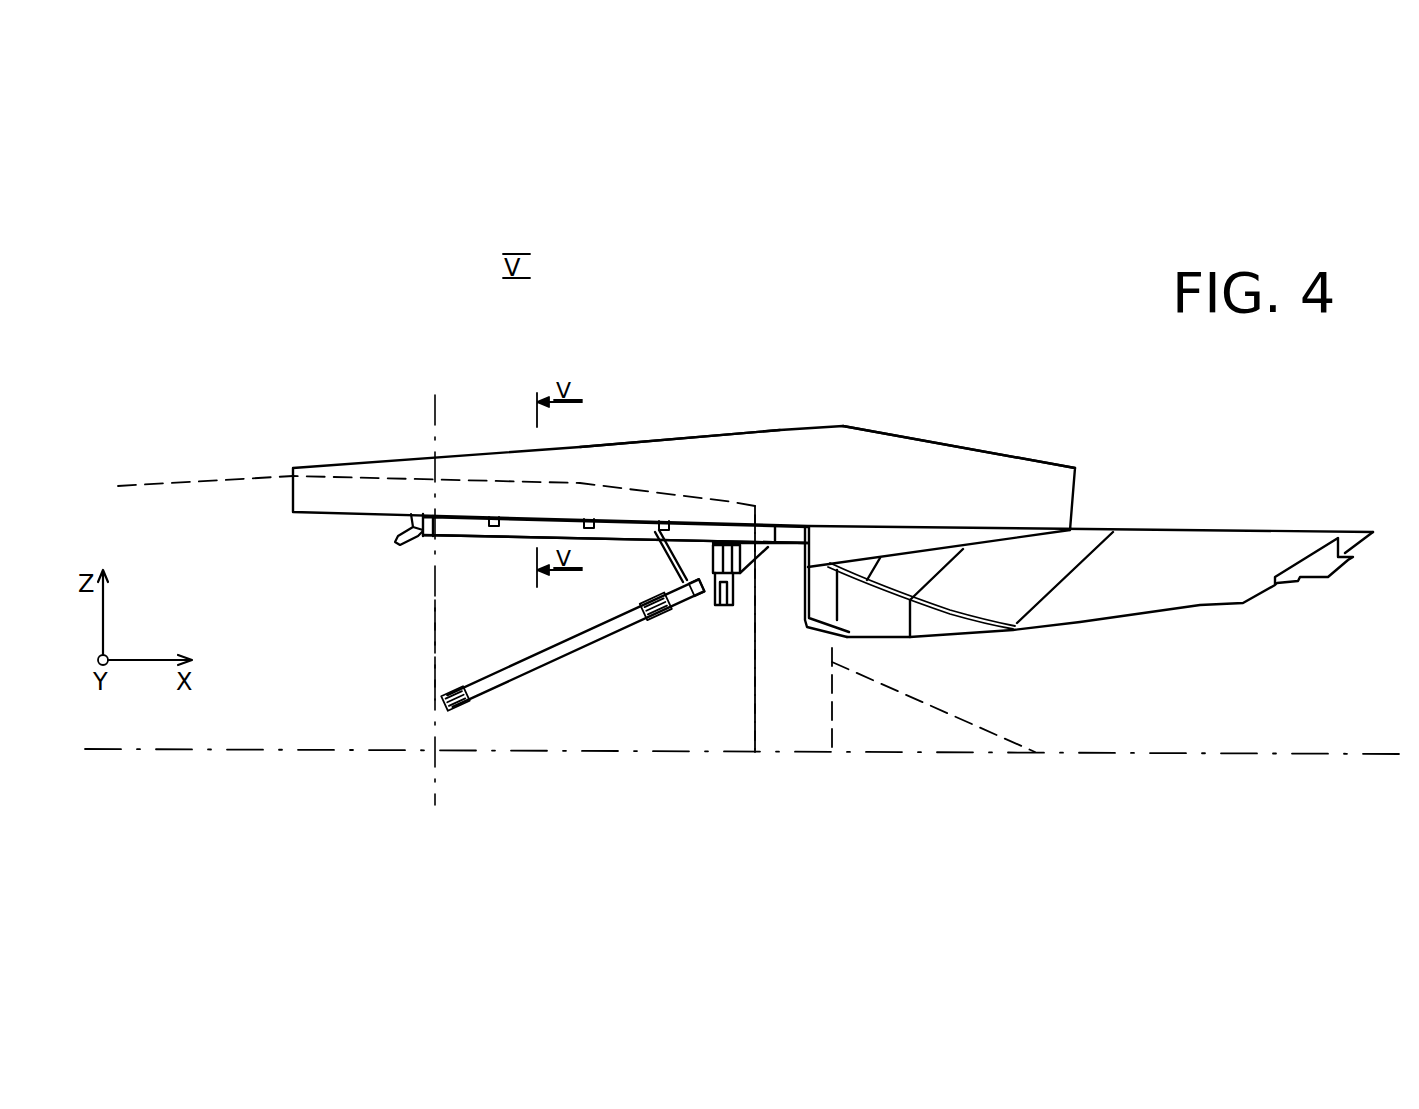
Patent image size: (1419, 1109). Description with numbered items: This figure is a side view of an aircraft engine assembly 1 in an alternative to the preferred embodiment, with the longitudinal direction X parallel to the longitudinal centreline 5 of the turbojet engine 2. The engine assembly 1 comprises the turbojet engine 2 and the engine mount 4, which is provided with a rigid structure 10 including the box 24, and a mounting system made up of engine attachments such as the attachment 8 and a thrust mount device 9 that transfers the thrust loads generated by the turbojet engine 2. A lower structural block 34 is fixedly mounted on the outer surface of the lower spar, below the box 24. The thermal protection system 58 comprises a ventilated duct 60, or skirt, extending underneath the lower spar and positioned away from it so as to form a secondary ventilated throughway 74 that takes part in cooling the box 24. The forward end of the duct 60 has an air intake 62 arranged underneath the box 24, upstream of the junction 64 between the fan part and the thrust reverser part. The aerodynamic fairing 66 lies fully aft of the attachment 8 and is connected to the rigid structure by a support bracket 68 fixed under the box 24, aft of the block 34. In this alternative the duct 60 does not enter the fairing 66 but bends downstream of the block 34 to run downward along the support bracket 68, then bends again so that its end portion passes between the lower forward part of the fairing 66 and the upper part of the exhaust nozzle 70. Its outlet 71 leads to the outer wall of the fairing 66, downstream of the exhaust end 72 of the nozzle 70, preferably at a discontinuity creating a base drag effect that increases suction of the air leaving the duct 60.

The engine assembly 1 is at (446, 362).
The turbojet engine 2 is at (224, 465).
The engine mount 4 is at (803, 380).
The longitudinal centreline 5 is at (256, 750).
The engine attachment 8 is at (734, 605).
The thrust mount device 9 is at (536, 680).
The rigid structure 10 is at (684, 353).
The box 24 is at (696, 424).
The lower structural block 34 is at (656, 552).
The thermal protection system 58 is at (463, 568).
The ventilated duct 60 is at (496, 522).
The air intake 62 is at (400, 542).
The junction line 64 is at (435, 638).
The aerodynamic fairing 66 is at (1218, 618).
The support bracket 68 is at (808, 528).
The exhaust nozzle 70 is at (815, 727).
The duct outlet 71 is at (852, 641).
The exhaust end 72 is at (832, 656).
The secondary ventilated throughway 74 is at (518, 526).